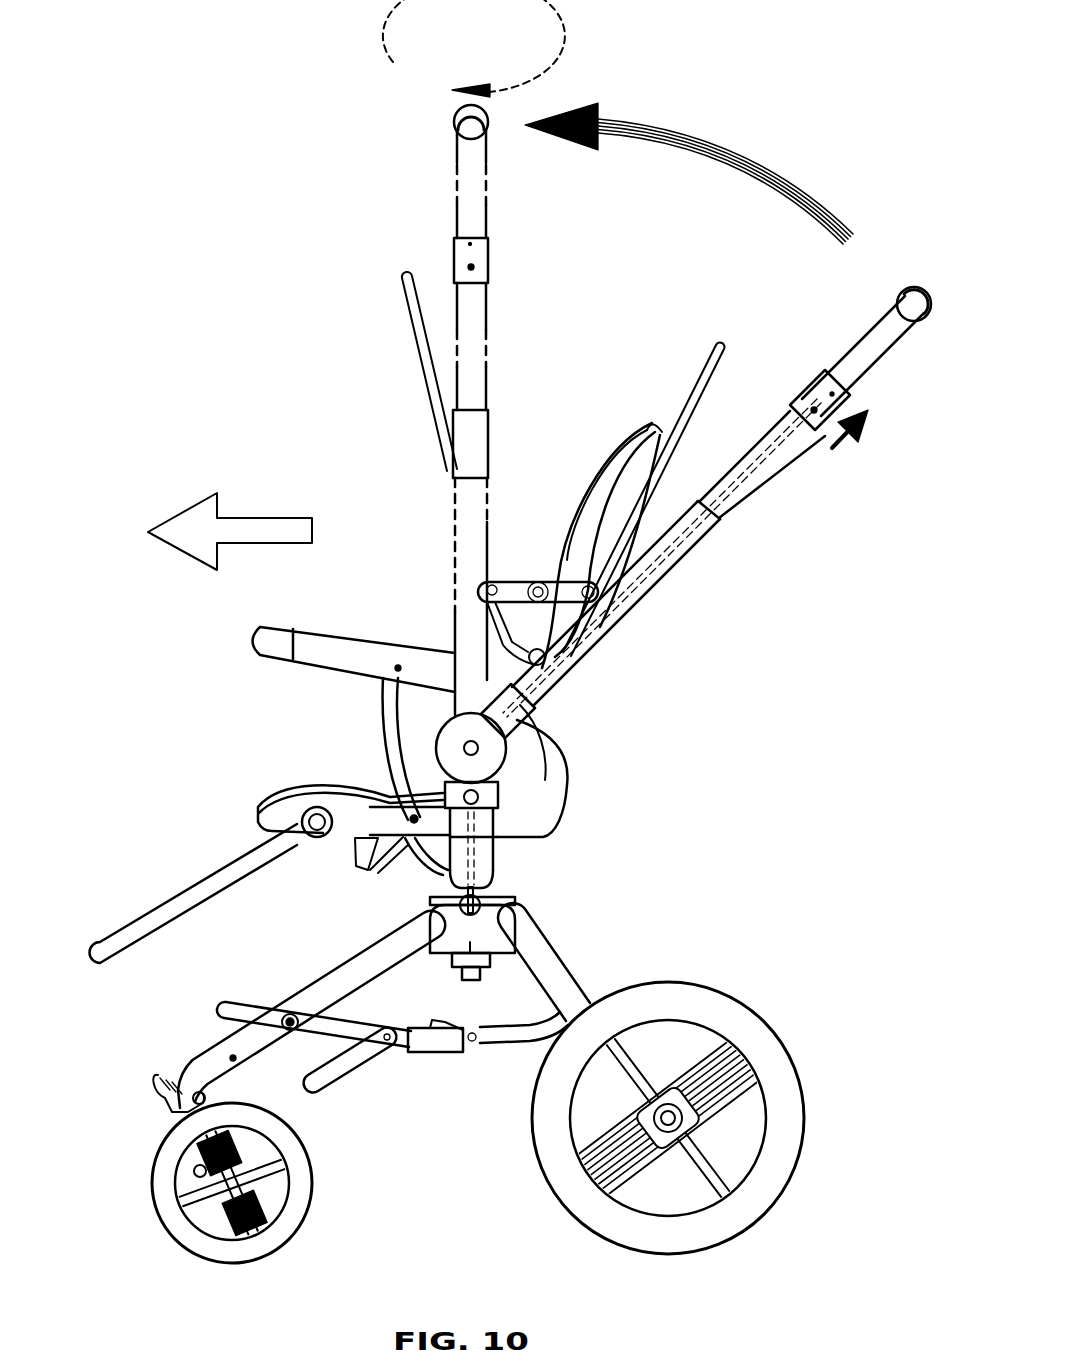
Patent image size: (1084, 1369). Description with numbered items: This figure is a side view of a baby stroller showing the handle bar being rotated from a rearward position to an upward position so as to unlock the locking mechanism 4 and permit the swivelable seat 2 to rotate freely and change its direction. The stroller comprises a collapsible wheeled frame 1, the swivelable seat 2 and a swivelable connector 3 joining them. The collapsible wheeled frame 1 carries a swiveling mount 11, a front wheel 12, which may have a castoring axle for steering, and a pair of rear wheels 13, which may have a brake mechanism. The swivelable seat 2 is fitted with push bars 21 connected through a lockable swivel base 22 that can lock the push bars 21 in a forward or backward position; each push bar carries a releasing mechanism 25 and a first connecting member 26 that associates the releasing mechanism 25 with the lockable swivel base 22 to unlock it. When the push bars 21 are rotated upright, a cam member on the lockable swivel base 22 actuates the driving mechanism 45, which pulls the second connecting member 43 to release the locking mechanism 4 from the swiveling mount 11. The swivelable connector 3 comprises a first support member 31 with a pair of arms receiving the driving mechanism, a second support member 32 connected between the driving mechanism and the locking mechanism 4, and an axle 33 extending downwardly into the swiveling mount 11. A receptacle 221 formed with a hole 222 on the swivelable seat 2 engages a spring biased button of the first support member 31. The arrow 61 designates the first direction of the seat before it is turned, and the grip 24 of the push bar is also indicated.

The collapsible wheeled frame 1 is at (786, 944).
The swivelable seat 2 is at (200, 338).
The swivelable connector 3 is at (665, 860).
The locking mechanism 4 is at (473, 913).
The swiveling mount 11 is at (470, 942).
The front wheel 12 is at (160, 1185).
The rear wheels 13 is at (782, 1095).
The push bars 21 is at (687, 557).
The lockable swivel base 22 is at (443, 740).
The handle grip / pin 24 is at (905, 293).
The releasing mechanism 25 is at (803, 390).
The first connecting member 26 is at (757, 462).
The first support member 31 is at (480, 873).
The second support member 32 is at (417, 860).
The axle 33 is at (458, 972).
The second connecting member 43 is at (483, 843).
The driving mechanism 45 is at (447, 780).
The arrow 61 is at (272, 520).
The receptacle 221 is at (500, 783).
The hole 222 is at (497, 817).